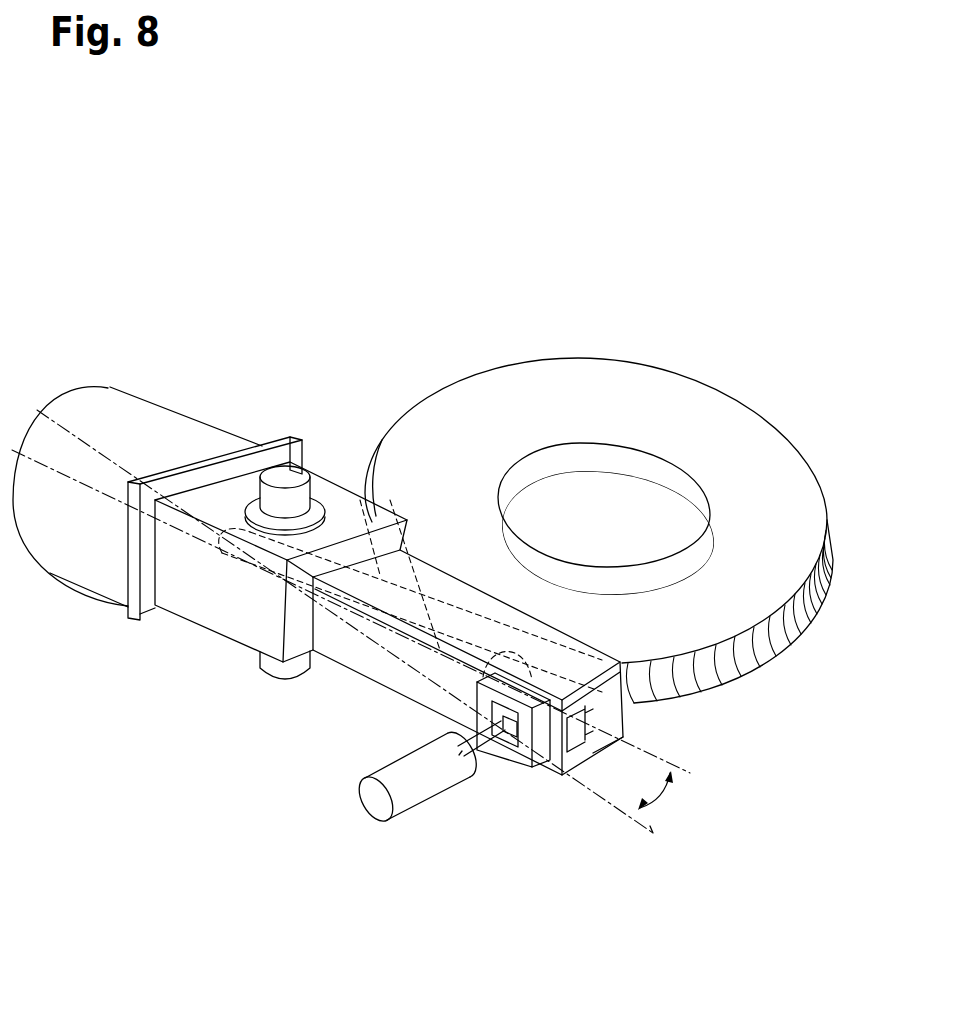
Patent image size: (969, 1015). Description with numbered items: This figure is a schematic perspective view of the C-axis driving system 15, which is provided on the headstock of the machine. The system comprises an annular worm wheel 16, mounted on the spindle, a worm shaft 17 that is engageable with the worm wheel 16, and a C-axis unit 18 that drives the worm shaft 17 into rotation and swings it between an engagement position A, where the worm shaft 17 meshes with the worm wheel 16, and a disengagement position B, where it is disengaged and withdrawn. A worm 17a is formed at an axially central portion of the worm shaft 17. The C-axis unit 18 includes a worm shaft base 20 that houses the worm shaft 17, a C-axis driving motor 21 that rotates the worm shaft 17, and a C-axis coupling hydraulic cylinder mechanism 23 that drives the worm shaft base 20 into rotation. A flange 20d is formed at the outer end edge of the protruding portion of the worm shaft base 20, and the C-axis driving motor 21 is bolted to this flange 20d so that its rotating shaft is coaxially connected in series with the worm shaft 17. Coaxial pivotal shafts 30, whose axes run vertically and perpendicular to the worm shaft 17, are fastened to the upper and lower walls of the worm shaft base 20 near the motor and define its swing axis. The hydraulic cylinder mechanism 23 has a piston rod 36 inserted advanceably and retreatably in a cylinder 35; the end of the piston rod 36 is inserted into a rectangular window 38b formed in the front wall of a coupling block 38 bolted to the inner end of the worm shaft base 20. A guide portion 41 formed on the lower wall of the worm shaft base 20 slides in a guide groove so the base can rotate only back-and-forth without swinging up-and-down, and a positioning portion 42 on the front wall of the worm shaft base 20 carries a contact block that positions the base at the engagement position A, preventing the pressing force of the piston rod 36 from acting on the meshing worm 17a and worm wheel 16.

The C-axis driving system 15 is at (410, 278).
The worm wheel 16 is at (572, 360).
The worm shaft 17 is at (357, 630).
The worm 17a is at (405, 700).
The C-axis unit 18 is at (108, 357).
The worm shaft base 20 is at (205, 632).
The flange 20d is at (287, 462).
The C-axis driving motor 21 is at (165, 405).
The C-axis coupling hydraulic cylinder mechanism 23 is at (510, 840).
The pivotal shaft 30 is at (313, 473).
The cylinder 35 is at (428, 800).
The piston rod 36 is at (478, 752).
The coupling block 38 is at (497, 770).
The rectangular window 38b is at (513, 766).
The guide portion 41 is at (633, 752).
The positioning portion 42 is at (593, 753).
The engagement position A is at (687, 767).
The disengagement position B is at (647, 828).